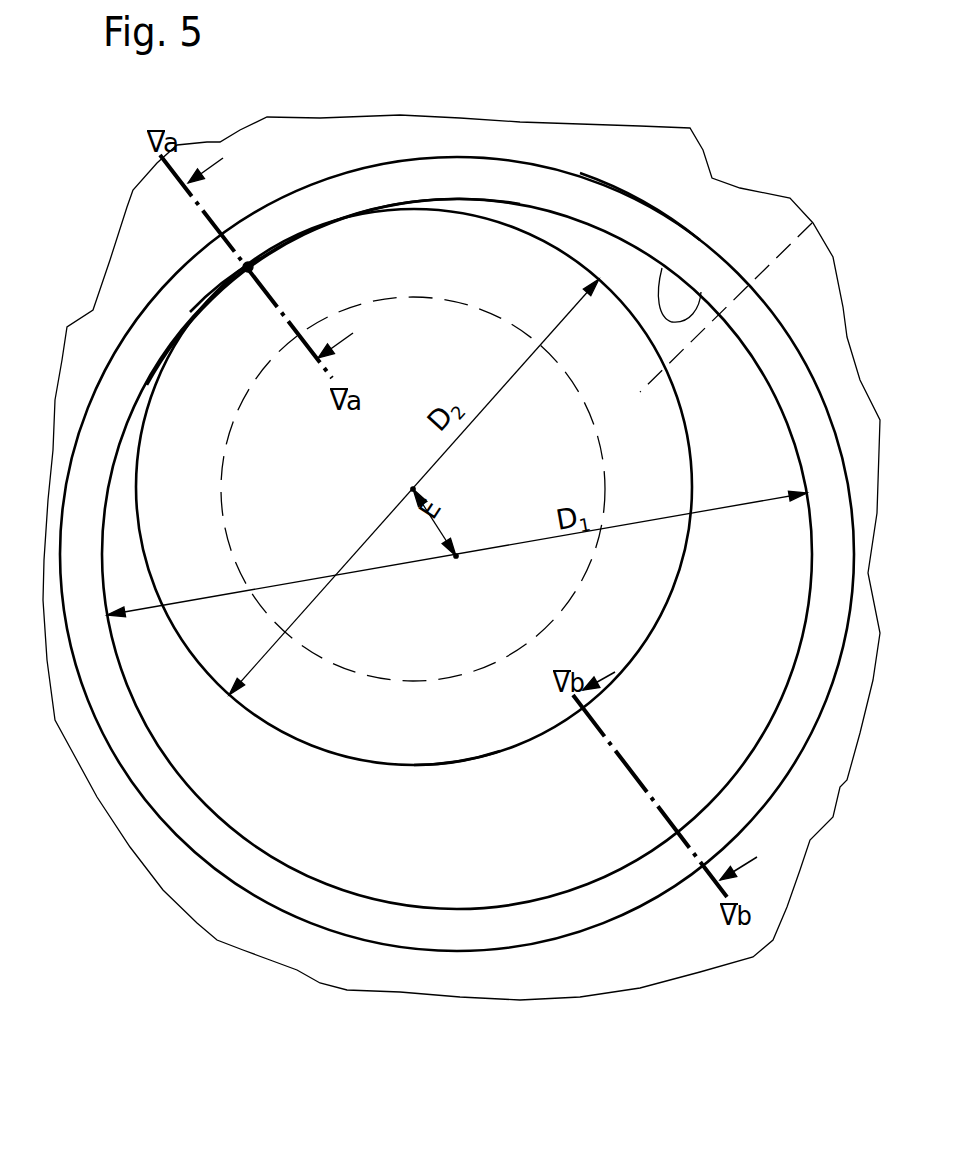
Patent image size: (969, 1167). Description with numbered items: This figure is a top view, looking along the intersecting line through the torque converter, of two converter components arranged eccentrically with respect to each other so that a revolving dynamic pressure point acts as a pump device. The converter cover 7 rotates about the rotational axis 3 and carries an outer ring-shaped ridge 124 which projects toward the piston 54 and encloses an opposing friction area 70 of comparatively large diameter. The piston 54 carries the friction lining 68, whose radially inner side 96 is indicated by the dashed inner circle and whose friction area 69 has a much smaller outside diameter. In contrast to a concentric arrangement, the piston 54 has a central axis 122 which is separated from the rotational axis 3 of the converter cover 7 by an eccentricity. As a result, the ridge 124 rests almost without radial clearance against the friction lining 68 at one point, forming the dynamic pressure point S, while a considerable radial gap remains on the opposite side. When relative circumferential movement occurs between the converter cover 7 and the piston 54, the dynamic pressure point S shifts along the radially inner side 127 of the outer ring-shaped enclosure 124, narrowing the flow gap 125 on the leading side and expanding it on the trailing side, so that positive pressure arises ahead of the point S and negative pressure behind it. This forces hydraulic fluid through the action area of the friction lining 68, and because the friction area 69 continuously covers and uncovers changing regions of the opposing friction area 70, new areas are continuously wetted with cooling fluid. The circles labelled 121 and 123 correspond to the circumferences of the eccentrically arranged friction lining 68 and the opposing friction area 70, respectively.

The converter cover 7 is at (773, 895).
The opposing friction area 70 is at (750, 410).
The cylindrical bore of housing 123 is at (808, 528).
The eccentric ring 121 is at (647, 640).
The friction lining 68 is at (378, 680).
The outer ring-shaped ridge 124 is at (603, 205).
The flow gap 125 is at (515, 222).
The radially inner side of the outer ring-shaped enclosure 127 is at (688, 312).
The friction area 69 is at (812, 223).
The radially inner side of the friction lining 96 is at (222, 287).
The dynamic pressure point S is at (244, 272).
The piston 54 is at (463, 745).
The central axis 122 is at (418, 489).
The rotational axis 3 is at (457, 558).